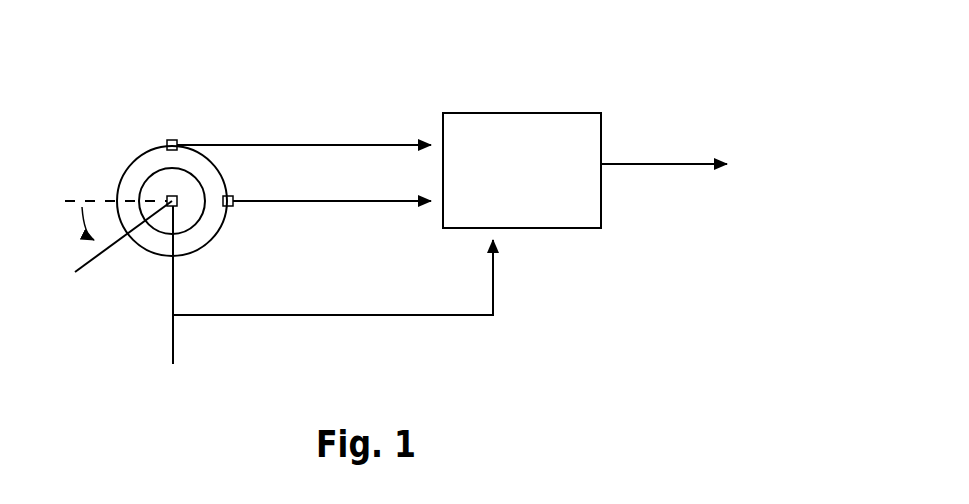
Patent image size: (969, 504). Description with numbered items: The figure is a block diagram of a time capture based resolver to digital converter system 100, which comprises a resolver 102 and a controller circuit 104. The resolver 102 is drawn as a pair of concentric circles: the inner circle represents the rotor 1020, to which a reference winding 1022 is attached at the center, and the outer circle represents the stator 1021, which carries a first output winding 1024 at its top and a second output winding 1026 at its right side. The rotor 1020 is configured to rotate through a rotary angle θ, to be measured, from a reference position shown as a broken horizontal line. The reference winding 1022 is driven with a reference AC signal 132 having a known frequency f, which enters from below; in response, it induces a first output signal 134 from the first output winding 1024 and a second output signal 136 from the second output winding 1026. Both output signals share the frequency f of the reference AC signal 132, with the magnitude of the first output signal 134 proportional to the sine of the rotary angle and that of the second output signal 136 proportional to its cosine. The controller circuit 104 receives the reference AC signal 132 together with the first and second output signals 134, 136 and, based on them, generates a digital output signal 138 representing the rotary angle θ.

The resolver to digital converter system 100 is at (676, 44).
The resolver 102 is at (150, 71).
The rotor 1020 is at (157, 160).
The stator 1021 is at (113, 170).
The reference winding 1022 is at (184, 216).
The first output winding 1024 is at (247, 99).
The second output winding 1026 is at (302, 183).
The controller circuit 104 is at (567, 167).
The reference AC signal 132 is at (172, 340).
The first output signal 134 is at (278, 143).
The second output signal 136 is at (283, 203).
The digital output signal 138 is at (675, 163).